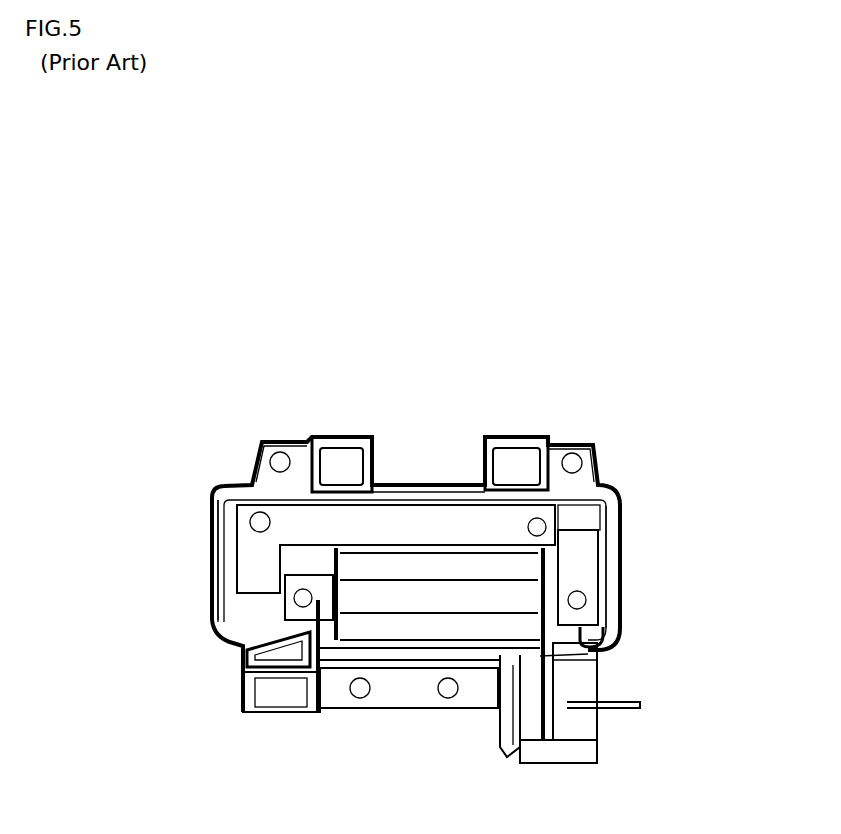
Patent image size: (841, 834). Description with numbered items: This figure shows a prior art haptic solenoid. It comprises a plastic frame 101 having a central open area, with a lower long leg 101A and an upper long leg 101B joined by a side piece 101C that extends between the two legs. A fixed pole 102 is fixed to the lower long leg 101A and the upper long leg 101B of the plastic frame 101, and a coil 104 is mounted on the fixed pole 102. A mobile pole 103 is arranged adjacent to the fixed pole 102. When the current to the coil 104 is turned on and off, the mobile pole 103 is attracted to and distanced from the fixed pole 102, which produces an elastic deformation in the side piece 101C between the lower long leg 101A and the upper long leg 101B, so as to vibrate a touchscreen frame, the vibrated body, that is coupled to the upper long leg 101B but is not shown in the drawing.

The plastic frame 101 is at (603, 478).
The lower long leg 101A is at (410, 660).
The upper long leg 101B is at (382, 500).
The side piece 101C is at (226, 556).
The fixed pole 102 is at (585, 562).
The mobile pole 103 is at (433, 530).
The coil 104 is at (593, 655).